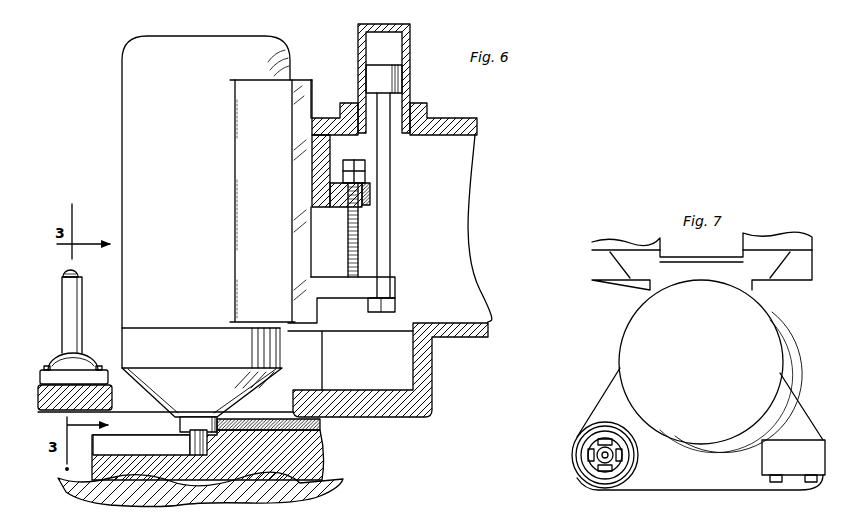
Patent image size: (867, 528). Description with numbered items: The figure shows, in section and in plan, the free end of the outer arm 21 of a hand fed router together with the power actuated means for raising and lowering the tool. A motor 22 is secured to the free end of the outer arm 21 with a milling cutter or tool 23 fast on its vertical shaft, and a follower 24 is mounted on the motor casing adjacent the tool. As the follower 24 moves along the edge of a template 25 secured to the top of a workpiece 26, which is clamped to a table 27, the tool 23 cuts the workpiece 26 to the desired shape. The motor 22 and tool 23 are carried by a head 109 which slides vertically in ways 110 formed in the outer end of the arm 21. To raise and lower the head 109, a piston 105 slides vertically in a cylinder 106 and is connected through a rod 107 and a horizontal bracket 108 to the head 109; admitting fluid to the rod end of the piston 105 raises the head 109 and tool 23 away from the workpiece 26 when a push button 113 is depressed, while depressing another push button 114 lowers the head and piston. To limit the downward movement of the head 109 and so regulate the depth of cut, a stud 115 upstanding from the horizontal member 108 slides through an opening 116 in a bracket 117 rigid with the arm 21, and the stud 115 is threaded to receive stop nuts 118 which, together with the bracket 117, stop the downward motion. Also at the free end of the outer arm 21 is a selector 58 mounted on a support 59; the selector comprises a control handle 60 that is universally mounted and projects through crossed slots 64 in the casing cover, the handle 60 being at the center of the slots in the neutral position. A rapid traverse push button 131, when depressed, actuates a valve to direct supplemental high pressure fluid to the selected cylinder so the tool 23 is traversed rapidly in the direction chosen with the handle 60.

In FIG. 6, the outer arm 21 is at (474, 121).
In FIG. 7, the outer arm 21 is at (632, 248).
In FIG. 6, the motor 22 is at (130, 70).
In FIG. 7, the motor 22 is at (627, 355).
In FIG. 6, the milling cutter or tool 23 is at (190, 448).
In FIG. 6, the follower 24 is at (180, 425).
In FIG. 6, the template 25 is at (265, 420).
In FIG. 6, the workpiece 26 is at (322, 461).
In FIG. 6, the table 27 is at (110, 491).
In FIG. 6, the selector 58 is at (58, 322).
In FIG. 7, the selector 58 is at (595, 479).
In FIG. 6, the support 59 is at (53, 402).
In FIG. 7, the support 59 is at (693, 484).
In FIG. 6, the control handle 60 is at (77, 327).
In FIG. 7, the control handle 60 is at (597, 463).
In FIG. 7, the crossed slots 64 is at (604, 455).
In FIG. 6, the piston 105 is at (402, 78).
In FIG. 6, the cylinder 106 is at (402, 46).
In FIG. 6, the rod 107 is at (391, 262).
In FIG. 6, the horizontal bracket 108 is at (396, 290).
In FIG. 6, the head 109 is at (280, 340).
In FIG. 7, the head 109 is at (705, 257).
In FIG. 6, the ways 110 is at (303, 100).
In FIG. 7, the ways 110 is at (632, 277).
In FIG. 7, the push button 113 is at (771, 483).
In FIG. 7, the push button 114 is at (811, 483).
In FIG. 6, the stud 115 is at (354, 246).
In FIG. 6, the opening 116 is at (370, 195).
In FIG. 6, the bracket 117 is at (340, 206).
In FIG. 6, the stop nuts 118 is at (366, 177).
In FIG. 6, the rapid traverse push button 131 is at (76, 271).